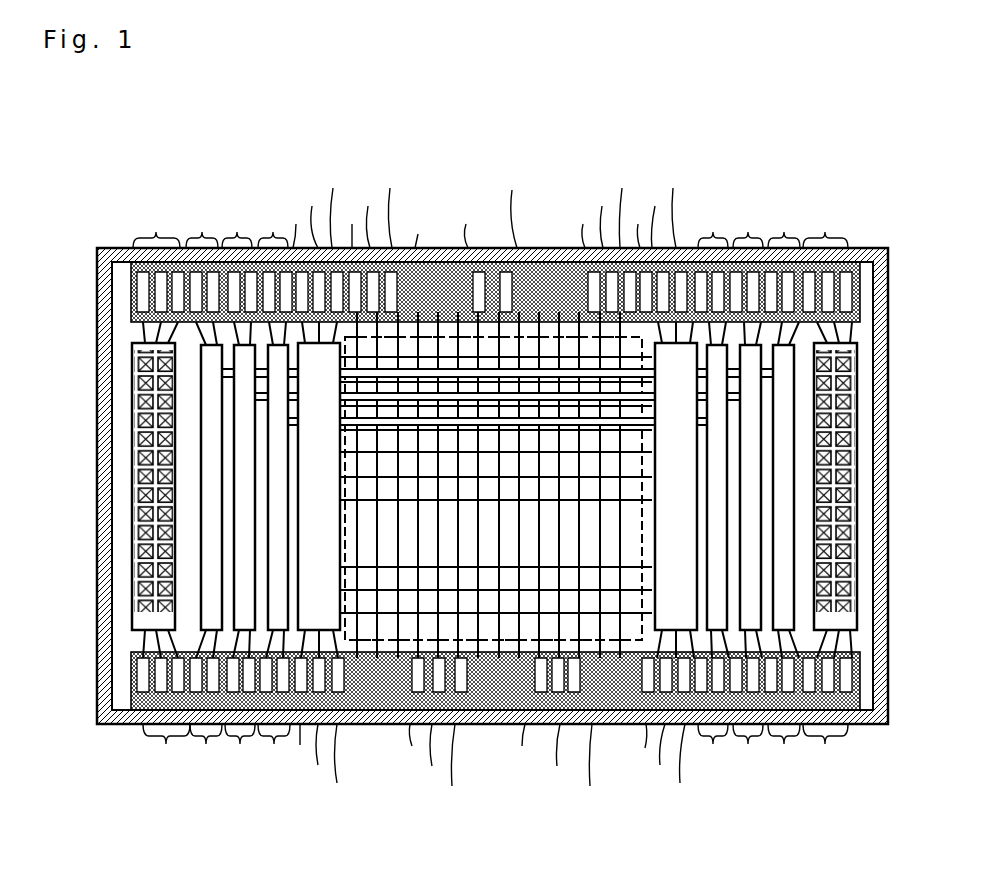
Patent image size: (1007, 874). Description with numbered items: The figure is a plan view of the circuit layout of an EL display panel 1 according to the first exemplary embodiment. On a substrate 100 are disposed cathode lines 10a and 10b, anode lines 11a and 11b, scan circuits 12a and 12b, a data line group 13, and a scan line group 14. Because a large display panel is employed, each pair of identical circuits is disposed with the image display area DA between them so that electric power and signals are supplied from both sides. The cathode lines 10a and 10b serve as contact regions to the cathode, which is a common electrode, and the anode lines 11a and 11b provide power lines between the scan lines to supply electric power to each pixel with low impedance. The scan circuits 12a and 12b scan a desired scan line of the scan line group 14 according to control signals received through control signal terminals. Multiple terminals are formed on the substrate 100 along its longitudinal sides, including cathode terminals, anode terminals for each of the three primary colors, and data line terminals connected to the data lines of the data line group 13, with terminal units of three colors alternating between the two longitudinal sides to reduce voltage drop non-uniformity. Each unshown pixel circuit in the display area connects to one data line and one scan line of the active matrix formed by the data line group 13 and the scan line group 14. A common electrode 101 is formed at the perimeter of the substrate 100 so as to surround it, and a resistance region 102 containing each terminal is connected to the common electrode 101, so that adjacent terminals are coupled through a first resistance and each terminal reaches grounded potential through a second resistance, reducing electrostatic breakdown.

The EL display panel 1 is at (518, 142).
The cathode line 10a is at (130, 347).
The cathode line 10b is at (858, 440).
The anode line 11a is at (295, 462).
The anode line 11b is at (697, 456).
The scan circuit 12a is at (300, 540).
The scan circuit 12b is at (683, 533).
The data line group 13 is at (604, 515).
The scan line group 14 is at (493, 636).
The substrate 100 is at (390, 724).
The common electrode 101 is at (477, 724).
The resistance region 102 is at (500, 724).